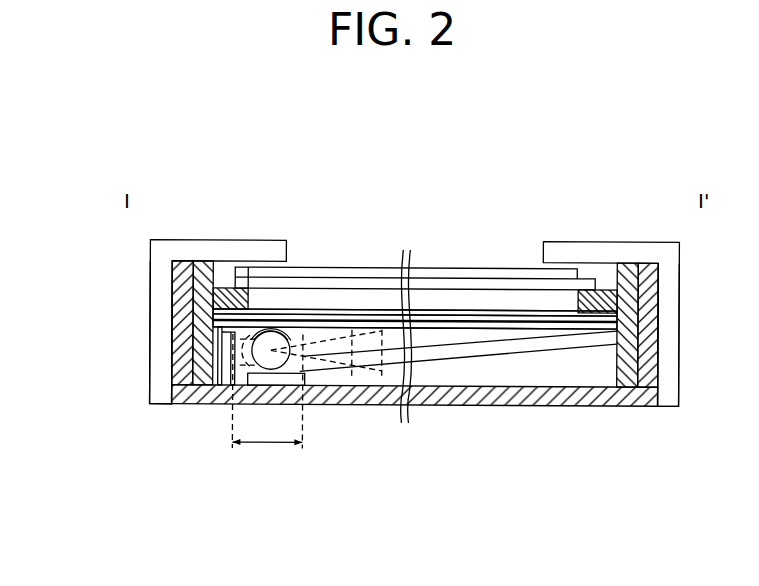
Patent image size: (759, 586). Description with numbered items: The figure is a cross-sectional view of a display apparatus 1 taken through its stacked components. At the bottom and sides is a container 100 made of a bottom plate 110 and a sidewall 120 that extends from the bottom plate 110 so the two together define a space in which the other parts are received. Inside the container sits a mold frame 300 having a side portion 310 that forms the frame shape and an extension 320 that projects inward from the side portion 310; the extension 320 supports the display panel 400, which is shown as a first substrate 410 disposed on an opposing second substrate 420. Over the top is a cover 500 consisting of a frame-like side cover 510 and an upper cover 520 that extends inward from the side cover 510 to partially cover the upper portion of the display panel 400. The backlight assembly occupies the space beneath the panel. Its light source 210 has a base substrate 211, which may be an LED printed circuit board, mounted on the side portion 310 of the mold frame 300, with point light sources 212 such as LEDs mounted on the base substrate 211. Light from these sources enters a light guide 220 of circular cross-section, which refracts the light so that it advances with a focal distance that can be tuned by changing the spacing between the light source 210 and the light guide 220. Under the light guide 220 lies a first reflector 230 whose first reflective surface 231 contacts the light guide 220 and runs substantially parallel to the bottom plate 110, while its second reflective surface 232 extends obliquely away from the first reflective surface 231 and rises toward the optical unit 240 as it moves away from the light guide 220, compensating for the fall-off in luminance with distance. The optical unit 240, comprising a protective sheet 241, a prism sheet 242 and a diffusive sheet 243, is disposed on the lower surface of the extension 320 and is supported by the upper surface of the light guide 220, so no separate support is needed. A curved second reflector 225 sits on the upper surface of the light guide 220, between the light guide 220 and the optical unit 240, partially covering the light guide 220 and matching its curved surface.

The display apparatus 1 is at (382, 142).
The container 100 is at (72, 352).
The bottom plate 110 is at (225, 396).
The sidewall 120 is at (185, 363).
The light source 210 is at (238, 499).
The base substrate 211 is at (219, 386).
The point light sources 212 is at (233, 386).
The light guide 220 is at (289, 343).
The second reflector 225 is at (269, 326).
The first reflector 230 is at (408, 499).
The first reflective surface 231 is at (278, 383).
The second reflective surface 232 is at (372, 362).
The optical unit 240 is at (545, 185).
The protective sheet 241 is at (433, 310).
The prism sheet 242 is at (477, 320).
The diffusive sheet 243 is at (522, 328).
The mold frame 300 is at (72, 285).
The side portion 310 is at (235, 320).
The extension 320 is at (230, 300).
The display panel 400 is at (643, 185).
The first substrate 410 is at (590, 283).
The second substrate 420 is at (560, 272).
The cover 500 is at (72, 218).
The side cover 510 is at (151, 263).
The upper cover 520 is at (162, 240).